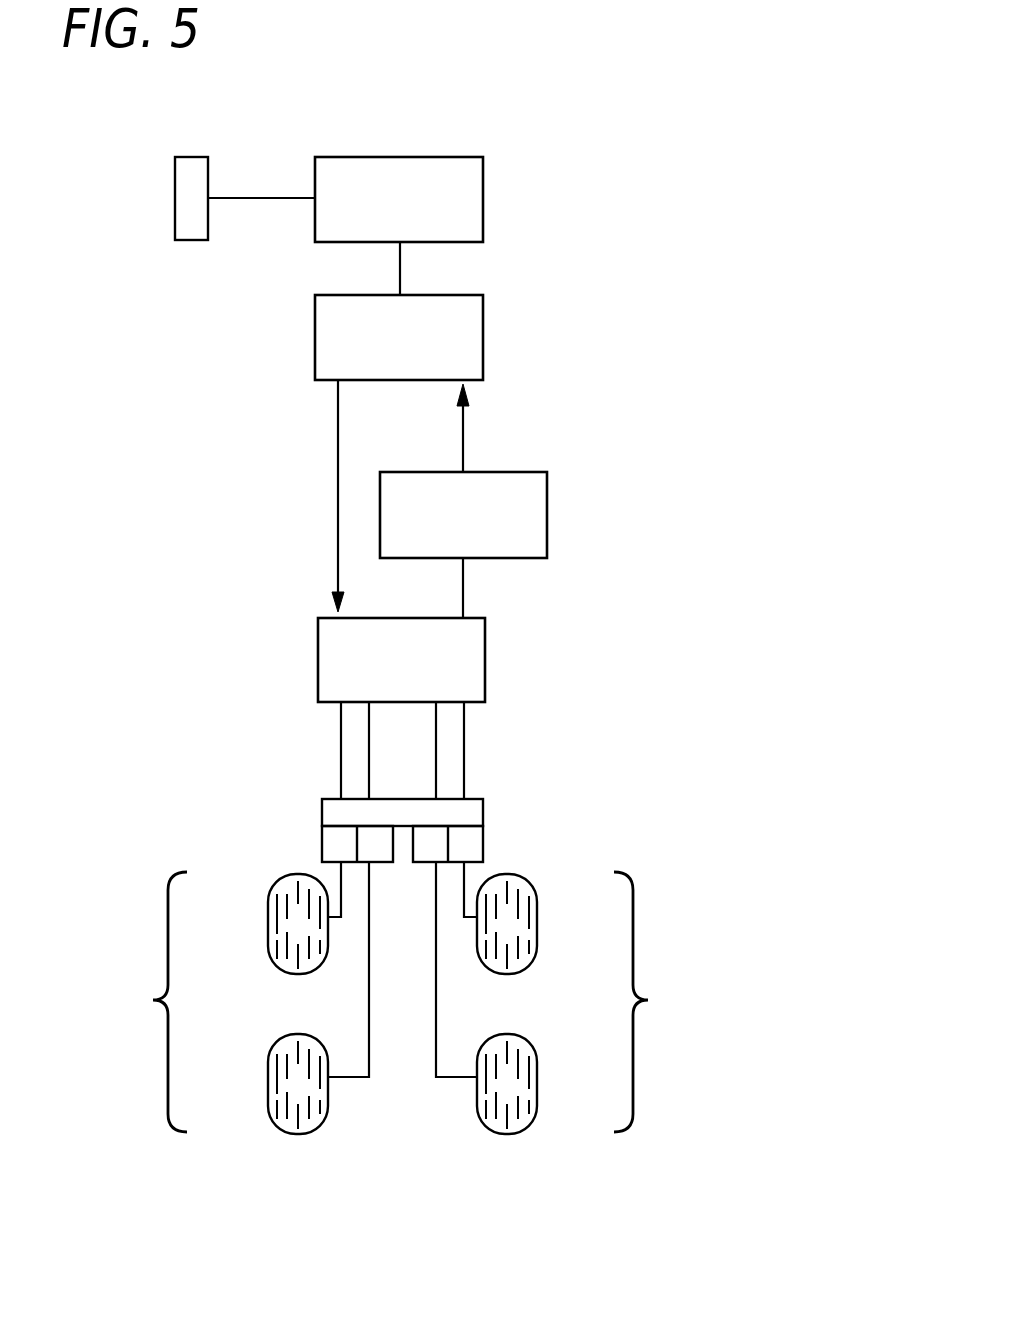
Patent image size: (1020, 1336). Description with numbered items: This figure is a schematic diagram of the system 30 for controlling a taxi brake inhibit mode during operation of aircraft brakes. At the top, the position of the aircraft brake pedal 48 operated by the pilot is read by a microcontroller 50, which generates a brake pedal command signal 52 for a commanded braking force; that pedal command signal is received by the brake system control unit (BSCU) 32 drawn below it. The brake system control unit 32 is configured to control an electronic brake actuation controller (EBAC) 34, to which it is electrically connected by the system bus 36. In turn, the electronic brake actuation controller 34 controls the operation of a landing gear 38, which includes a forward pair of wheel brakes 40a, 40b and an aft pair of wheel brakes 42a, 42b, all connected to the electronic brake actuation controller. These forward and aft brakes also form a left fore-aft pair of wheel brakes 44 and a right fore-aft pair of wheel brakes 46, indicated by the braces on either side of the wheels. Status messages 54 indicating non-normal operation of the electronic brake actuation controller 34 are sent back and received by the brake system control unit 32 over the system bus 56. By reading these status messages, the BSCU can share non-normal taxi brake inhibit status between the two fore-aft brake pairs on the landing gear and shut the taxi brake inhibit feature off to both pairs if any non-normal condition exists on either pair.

The system 30 is at (650, 347).
The brake system control unit (BSCU) 32 is at (315, 340).
The electronic brake actuation controller (EBAC) 34 is at (318, 660).
The system bus 36 is at (338, 498).
The landing gear 38 is at (704, 824).
The forward wheel brake 40a is at (282, 876).
The forward wheel brake 40b is at (524, 876).
The aft wheel brake 42a is at (283, 1132).
The aft wheel brake 42b is at (524, 1132).
The left fore-aft pair of wheel brakes 44 is at (151, 1002).
The right fore-aft pair of wheel brakes 46 is at (655, 1002).
The aircraft brake pedal 48 is at (175, 200).
The microcontroller 50 is at (483, 200).
The brake pedal command signal 52 is at (400, 268).
The status messages 54 is at (547, 517).
The system bus 56 is at (463, 588).